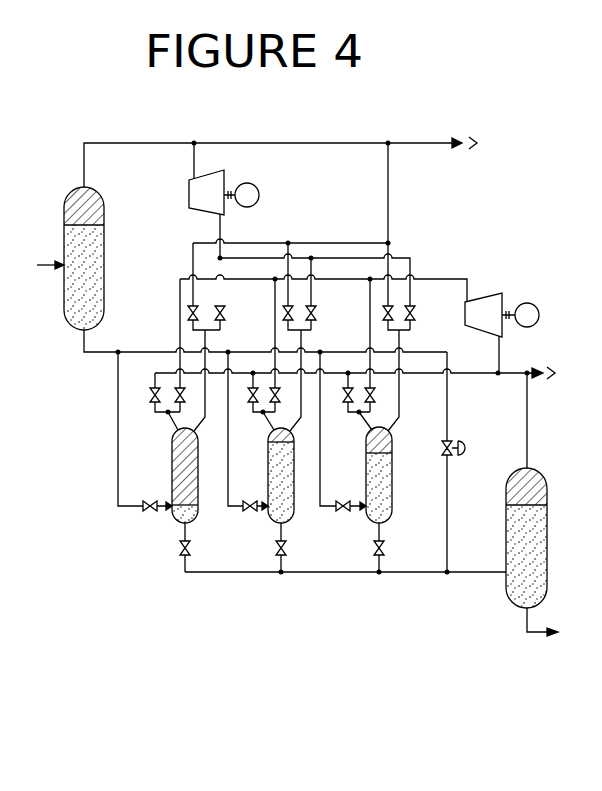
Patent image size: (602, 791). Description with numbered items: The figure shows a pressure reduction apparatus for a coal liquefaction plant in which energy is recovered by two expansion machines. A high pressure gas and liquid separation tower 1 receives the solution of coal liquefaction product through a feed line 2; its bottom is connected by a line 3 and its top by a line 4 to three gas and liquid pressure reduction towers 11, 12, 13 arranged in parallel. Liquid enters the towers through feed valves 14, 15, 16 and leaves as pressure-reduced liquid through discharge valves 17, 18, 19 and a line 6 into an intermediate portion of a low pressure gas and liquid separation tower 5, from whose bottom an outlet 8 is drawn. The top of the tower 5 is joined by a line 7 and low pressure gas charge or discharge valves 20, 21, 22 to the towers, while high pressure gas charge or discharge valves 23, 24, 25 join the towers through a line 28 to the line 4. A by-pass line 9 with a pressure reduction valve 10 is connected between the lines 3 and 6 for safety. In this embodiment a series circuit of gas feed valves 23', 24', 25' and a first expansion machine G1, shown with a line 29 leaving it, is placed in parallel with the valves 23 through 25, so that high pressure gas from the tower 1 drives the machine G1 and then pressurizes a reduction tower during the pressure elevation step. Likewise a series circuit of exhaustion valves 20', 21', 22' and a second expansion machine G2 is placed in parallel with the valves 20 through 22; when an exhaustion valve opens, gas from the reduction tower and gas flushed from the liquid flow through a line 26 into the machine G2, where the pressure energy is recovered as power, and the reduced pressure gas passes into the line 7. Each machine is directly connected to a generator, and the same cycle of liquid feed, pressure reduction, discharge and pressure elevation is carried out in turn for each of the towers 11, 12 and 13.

The high pressure gas and liquid separation tower 1 is at (63, 300).
The feed line 2 is at (42, 266).
The line 3 is at (82, 354).
The line 4 is at (137, 144).
The low pressure gas and liquid separation tower 5 is at (548, 552).
The line 6 is at (462, 575).
The line 7 is at (528, 438).
The product outlet 8 is at (535, 635).
The by-pass line 9 is at (449, 497).
The pressure reduction valve 10 is at (452, 443).
The gas and liquid pressure reduction tower 11 is at (172, 470).
The gas and liquid pressure reduction tower 12 is at (268, 470).
The gas and liquid pressure reduction tower 13 is at (366, 482).
The feed valve 14 is at (148, 512).
The feed valve 15 is at (247, 513).
The feed valve 16 is at (343, 512).
The pressure-reduced liquid discharge valve 17 is at (181, 553).
The pressure-reduced liquid discharge valve 18 is at (276, 551).
The pressure-reduced liquid discharge valve 19 is at (374, 551).
The low pressure gas charge or discharge valve 20 is at (143, 378).
The exhaustion valve 20' is at (156, 418).
The low pressure gas charge or discharge valve 21 is at (248, 418).
The exhaustion valve 21' is at (314, 430).
The low pressure gas charge or discharge valve 22 is at (346, 419).
The exhaustion valve 22' is at (399, 419).
The high pressure gas charge or discharge valve 23 is at (164, 319).
The gas feed valve 23' is at (243, 304).
The high pressure gas charge or discharge valve 24 is at (267, 325).
The gas feed valve 24' is at (336, 326).
The high pressure gas charge or discharge valve 25 is at (360, 303).
The gas feed valve 25' is at (433, 327).
The line 26 is at (438, 280).
The line 28 is at (388, 200).
The expander outlet line 29 is at (222, 242).
The first expansion machine G1 is at (223, 178).
The second expansion machine G2 is at (482, 300).